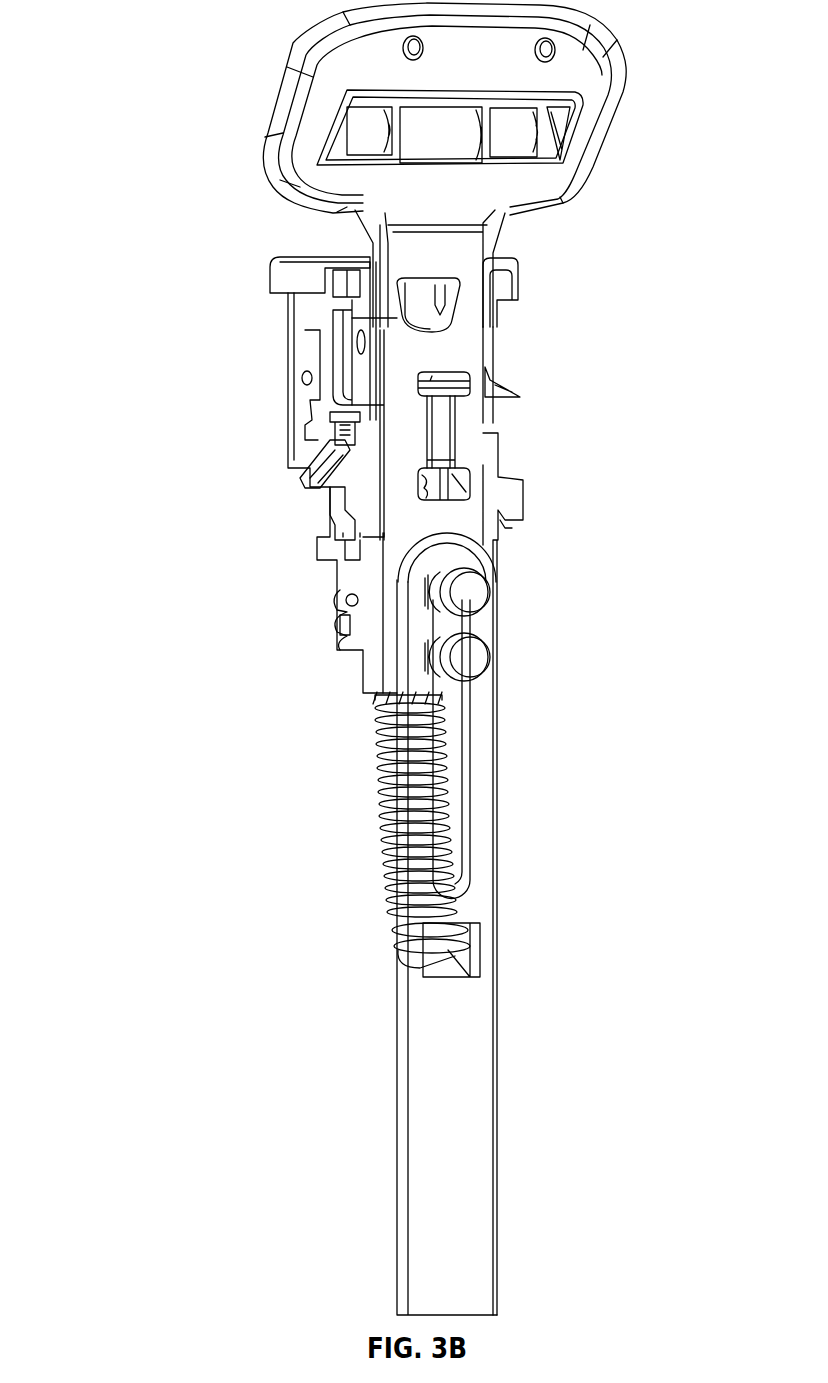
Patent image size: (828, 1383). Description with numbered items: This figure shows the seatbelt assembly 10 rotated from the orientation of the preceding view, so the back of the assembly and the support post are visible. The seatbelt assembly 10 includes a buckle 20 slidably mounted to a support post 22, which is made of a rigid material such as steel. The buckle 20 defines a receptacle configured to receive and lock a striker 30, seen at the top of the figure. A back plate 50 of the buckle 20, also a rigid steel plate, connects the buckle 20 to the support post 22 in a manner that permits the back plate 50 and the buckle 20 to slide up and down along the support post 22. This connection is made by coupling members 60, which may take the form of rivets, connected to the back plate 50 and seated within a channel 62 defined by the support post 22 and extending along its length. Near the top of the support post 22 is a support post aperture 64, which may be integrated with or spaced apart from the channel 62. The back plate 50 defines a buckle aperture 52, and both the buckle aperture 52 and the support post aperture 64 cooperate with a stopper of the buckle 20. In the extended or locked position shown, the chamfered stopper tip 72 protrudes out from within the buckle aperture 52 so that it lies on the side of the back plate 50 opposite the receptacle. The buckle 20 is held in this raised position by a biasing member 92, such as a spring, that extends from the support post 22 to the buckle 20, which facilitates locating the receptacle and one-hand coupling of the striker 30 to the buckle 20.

The seatbelt assembly 10 is at (125, 28).
The buckle 20 is at (270, 283).
The support post 22 is at (487, 1093).
The striker 30 is at (600, 133).
The back plate 50 is at (477, 442).
The buckle aperture 52 is at (467, 392).
The coupling members 60 is at (473, 653).
The channel 62 is at (467, 803).
The support post aperture 64 is at (427, 573).
The stopper tip 72 is at (477, 378).
The biasing member 92 is at (383, 807).